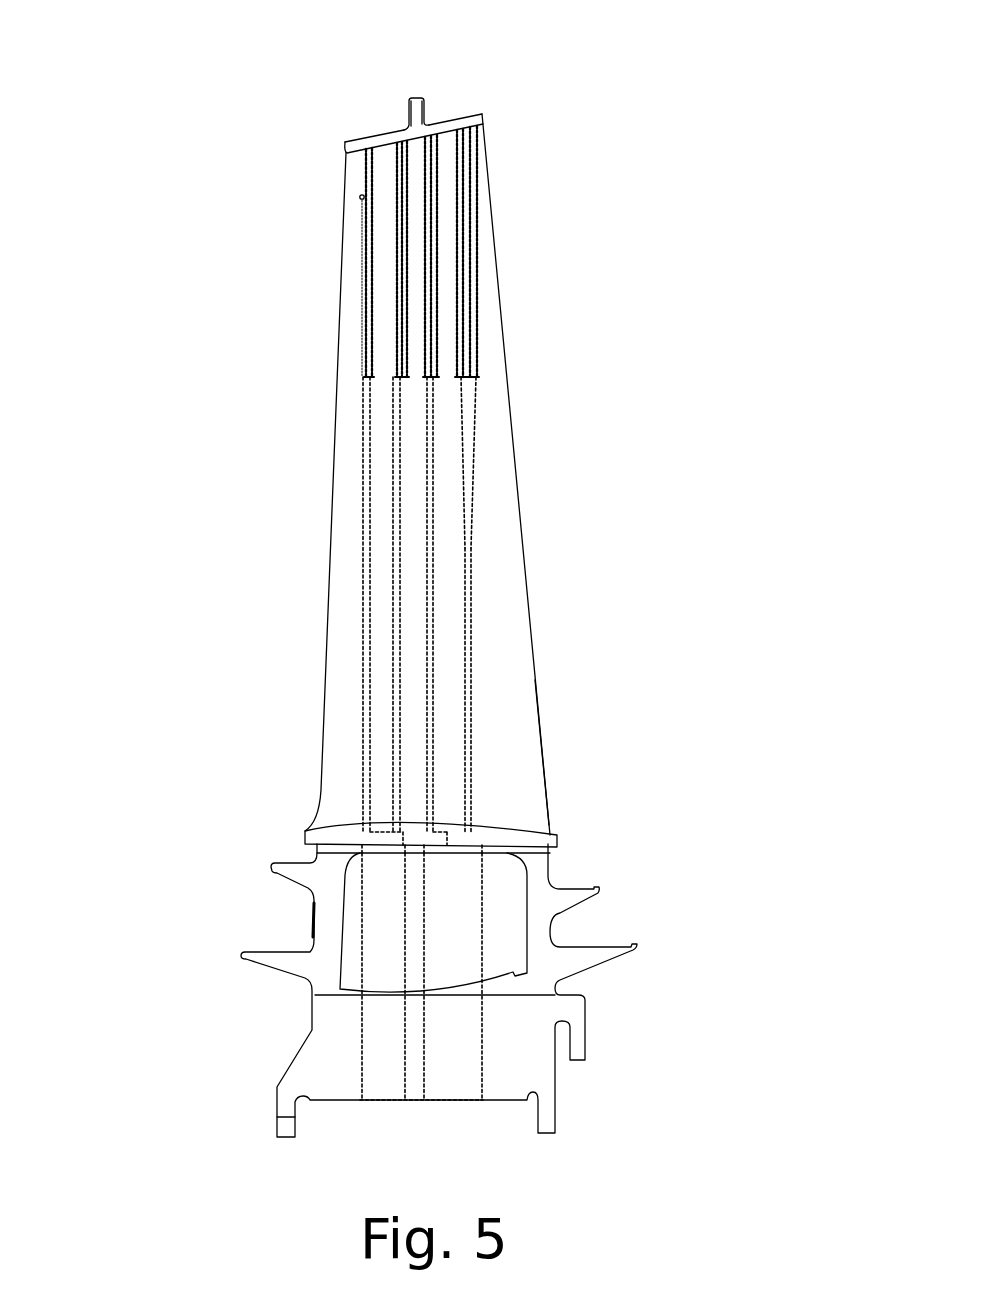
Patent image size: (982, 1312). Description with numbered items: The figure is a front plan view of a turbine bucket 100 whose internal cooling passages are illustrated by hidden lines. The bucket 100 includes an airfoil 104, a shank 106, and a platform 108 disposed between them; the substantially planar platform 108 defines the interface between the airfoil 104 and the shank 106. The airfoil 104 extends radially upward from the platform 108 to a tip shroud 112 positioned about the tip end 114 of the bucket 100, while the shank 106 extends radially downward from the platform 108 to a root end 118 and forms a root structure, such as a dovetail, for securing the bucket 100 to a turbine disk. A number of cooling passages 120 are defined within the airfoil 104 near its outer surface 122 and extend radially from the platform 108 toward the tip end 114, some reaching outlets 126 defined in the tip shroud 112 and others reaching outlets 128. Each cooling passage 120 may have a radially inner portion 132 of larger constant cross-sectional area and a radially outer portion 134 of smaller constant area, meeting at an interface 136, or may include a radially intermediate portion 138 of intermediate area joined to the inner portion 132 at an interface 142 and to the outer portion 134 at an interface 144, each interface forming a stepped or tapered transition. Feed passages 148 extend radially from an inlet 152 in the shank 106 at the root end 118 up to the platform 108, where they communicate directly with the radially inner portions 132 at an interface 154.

The turbine bucket 100 is at (215, 98).
The airfoil 104 is at (530, 618).
The shank 106 is at (548, 930).
The platform 108 is at (305, 832).
The tip shroud 112 is at (482, 117).
The tip end 114 is at (477, 52).
The root end 118 is at (513, 1163).
The cooling passages 120 is at (467, 543).
The outer surface 122 is at (518, 732).
The outlets 126 is at (400, 137).
The outlets 128 is at (360, 196).
The radially inner portion 132 is at (470, 647).
The radially outer portion 134 is at (465, 200).
The interface 136 is at (462, 377).
The radially intermediate portion 138 is at (460, 442).
The interface 142 is at (472, 530).
The interface 144 is at (460, 375).
The feed passages 148 is at (425, 1065).
The inlet 152 is at (380, 1100).
The interface 154 is at (447, 830).